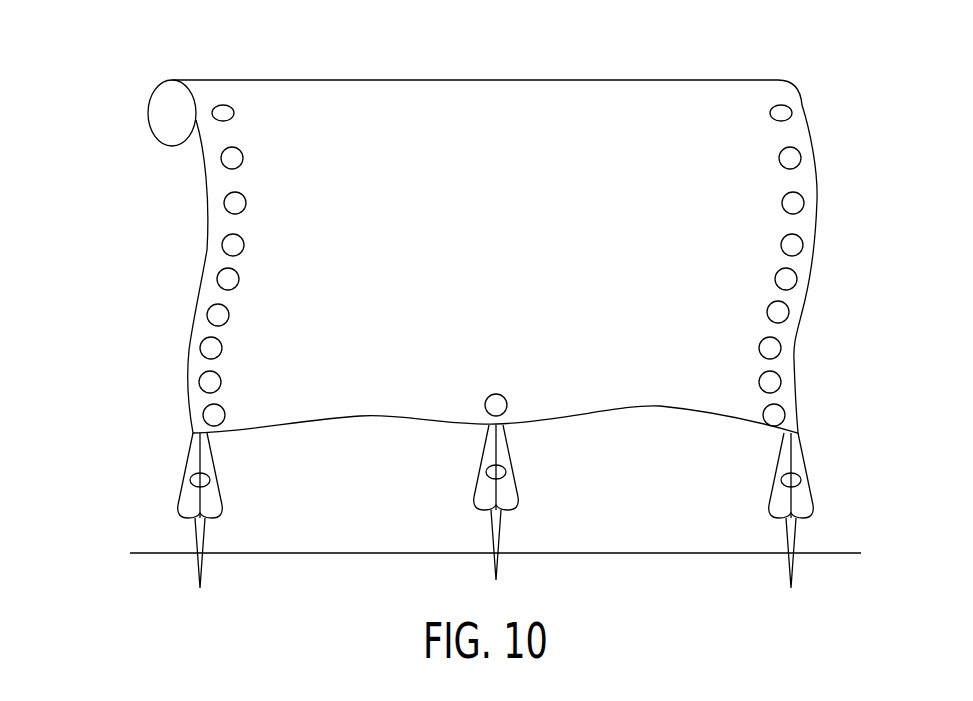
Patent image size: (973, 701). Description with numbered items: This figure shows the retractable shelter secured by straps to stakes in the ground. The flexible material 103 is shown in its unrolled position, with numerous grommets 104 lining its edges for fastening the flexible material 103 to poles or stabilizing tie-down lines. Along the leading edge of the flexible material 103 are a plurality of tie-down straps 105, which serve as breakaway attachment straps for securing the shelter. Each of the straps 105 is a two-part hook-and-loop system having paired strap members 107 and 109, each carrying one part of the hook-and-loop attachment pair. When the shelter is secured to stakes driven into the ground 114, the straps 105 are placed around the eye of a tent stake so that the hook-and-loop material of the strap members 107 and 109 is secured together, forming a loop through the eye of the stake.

The flexible material 103 is at (815, 224).
The grommets 104 is at (788, 309).
The tie-down straps 105 is at (497, 505).
The strap member 107 is at (180, 500).
The strap member 109 is at (222, 508).
The ground 114 is at (830, 553).